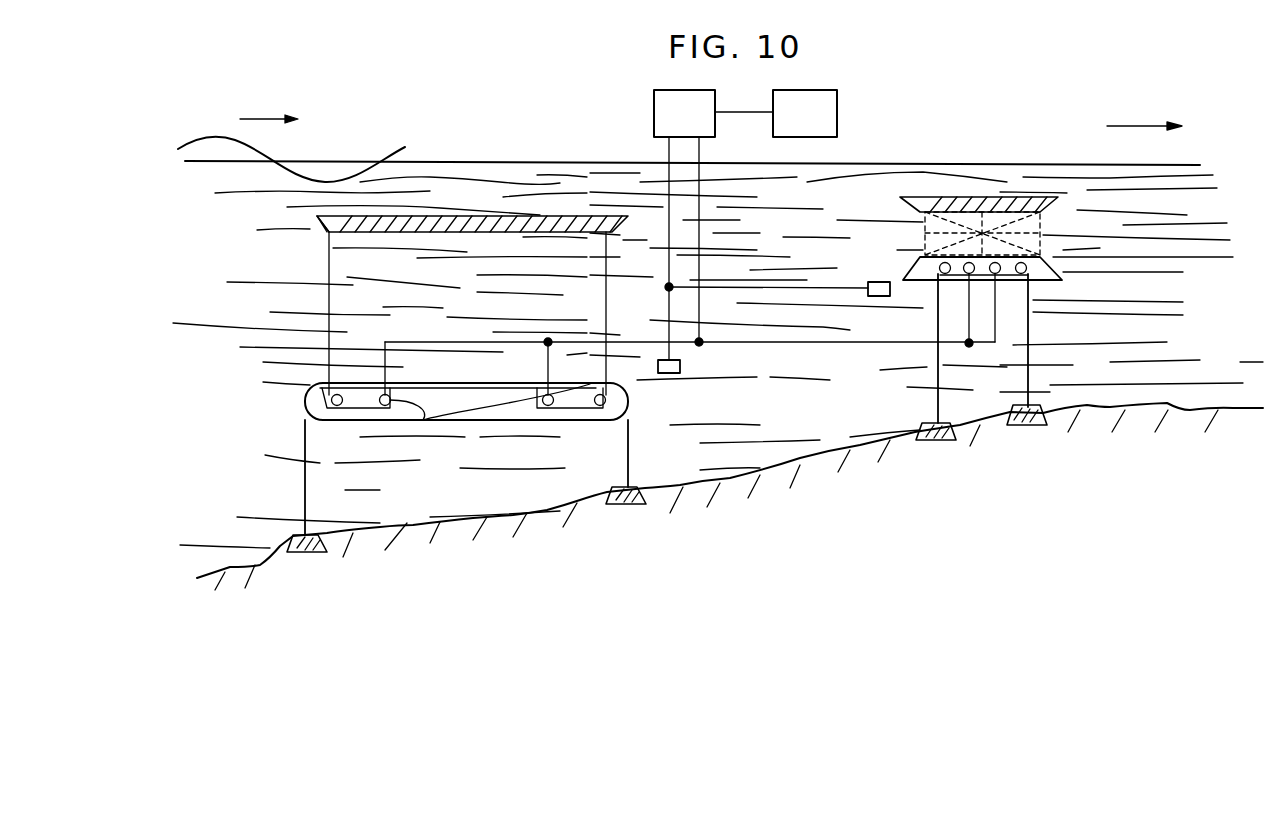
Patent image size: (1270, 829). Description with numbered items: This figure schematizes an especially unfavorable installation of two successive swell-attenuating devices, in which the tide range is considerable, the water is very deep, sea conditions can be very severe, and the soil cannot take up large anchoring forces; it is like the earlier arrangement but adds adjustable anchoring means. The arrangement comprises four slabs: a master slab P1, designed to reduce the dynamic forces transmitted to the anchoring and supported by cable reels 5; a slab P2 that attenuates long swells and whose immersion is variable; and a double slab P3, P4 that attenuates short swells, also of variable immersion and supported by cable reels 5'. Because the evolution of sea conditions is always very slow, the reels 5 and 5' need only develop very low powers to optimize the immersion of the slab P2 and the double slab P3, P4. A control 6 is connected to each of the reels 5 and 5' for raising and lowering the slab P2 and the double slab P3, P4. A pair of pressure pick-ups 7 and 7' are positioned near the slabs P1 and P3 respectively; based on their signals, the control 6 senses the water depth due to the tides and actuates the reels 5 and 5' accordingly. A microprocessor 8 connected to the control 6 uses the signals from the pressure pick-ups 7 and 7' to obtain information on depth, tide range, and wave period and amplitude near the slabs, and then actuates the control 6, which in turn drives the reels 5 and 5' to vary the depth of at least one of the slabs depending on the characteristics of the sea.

The master slab P1 is at (328, 392).
The slab attenuating long swells P2 is at (320, 232).
The double slab attenuating short swells P3 is at (885, 266).
The double slab attenuating short swells P4 is at (895, 202).
The cable reels 5 is at (473, 420).
The cable reels 5' is at (847, 308).
The control 6 is at (655, 113).
The pressure pick-up 7 is at (695, 365).
The pressure pick-up 7' is at (796, 297).
The microprocessor 8 is at (837, 114).